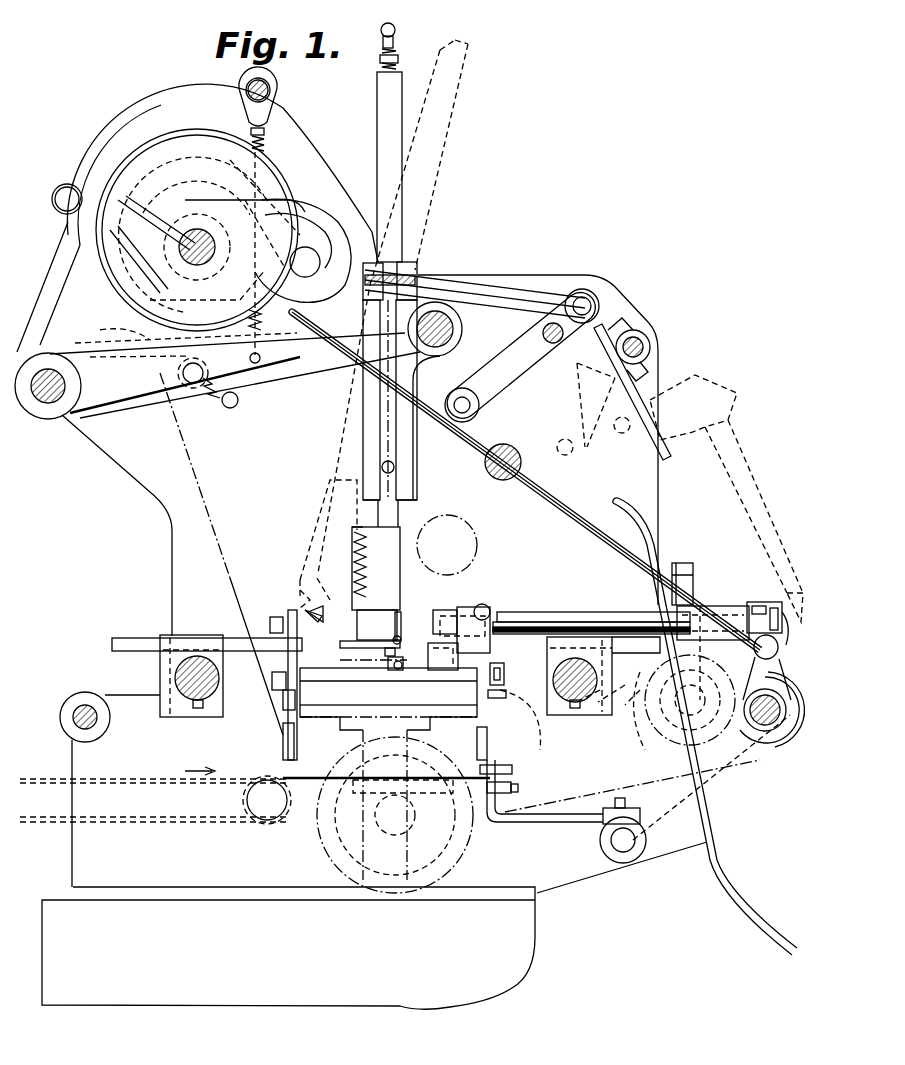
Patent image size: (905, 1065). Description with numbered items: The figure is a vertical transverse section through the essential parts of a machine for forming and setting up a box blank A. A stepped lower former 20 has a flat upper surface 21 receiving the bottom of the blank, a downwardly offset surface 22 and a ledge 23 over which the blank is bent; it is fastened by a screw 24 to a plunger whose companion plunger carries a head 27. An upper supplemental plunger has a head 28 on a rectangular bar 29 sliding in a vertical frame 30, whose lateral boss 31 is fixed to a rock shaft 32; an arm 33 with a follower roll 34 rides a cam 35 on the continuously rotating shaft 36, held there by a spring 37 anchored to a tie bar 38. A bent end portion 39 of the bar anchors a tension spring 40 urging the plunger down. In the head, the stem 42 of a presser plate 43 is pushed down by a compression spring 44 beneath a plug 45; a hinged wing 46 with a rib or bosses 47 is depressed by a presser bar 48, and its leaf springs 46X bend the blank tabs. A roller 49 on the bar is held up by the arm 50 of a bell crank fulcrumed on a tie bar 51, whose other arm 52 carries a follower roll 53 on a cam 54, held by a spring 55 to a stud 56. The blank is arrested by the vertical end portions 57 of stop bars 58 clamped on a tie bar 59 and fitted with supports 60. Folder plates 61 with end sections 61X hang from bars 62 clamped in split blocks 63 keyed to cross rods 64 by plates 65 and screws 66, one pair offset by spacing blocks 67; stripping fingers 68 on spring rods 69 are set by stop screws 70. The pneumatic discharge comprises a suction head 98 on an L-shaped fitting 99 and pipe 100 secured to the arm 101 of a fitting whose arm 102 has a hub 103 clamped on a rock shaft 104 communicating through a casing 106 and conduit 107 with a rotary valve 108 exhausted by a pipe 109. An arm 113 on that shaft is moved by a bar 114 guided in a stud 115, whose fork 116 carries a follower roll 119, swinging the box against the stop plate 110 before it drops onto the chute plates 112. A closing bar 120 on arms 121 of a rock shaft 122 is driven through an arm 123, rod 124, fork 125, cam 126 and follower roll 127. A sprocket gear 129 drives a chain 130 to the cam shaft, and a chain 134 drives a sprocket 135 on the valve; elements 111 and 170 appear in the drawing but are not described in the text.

The lower former 20 is at (388, 792).
The flat upper surface 21 is at (157, 806).
The downwardly offset flat surface 22 is at (400, 722).
The ledge 23 is at (352, 708).
The screw 24 is at (190, 146).
The head 27 is at (388, 686).
The plunger head 28 is at (378, 110).
The bar 29 is at (397, 507).
The frame 30 is at (418, 447).
The lateral boss 31 is at (463, 336).
The rock shaft 32 is at (455, 322).
The arm 33 is at (266, 376).
The follower roll 34 is at (186, 385).
The cam 35 is at (150, 365).
The continuously rotating shaft 36 is at (180, 250).
The spring 37 is at (266, 139).
The tie bar 38 is at (275, 92).
The laterally bent end portion 39 is at (396, 33).
The tension spring 40 is at (399, 60).
The stem 42 is at (328, 615).
The presser plate 43 is at (342, 645).
The compression spring 44 is at (350, 565).
The screw or plug 45 is at (360, 520).
The wing 46 is at (385, 690).
The leaf springs 46X is at (292, 600).
The rib or spaced bosses 47 is at (398, 636).
The presser bar 48 is at (400, 615).
The antifriction roller 49 is at (414, 272).
The arm 50 is at (290, 381).
The tie bar 51 is at (48, 398).
The arm 52 is at (42, 288).
The cam follower roll 53 is at (60, 198).
The cam 54 is at (110, 170).
The tension spring 55 is at (203, 402).
The stud 56 is at (229, 409).
The vertical end portions 57 is at (512, 769).
The horizontal bars 58 is at (566, 823).
The tie bar 59 is at (632, 840).
The adjustable supports 60 is at (518, 788).
The folder plates 61 is at (300, 722).
The vertical end sections 61X is at (283, 752).
The horizontal bars 62 is at (530, 647).
The split blocks 63 is at (198, 708).
The cross rods 64 is at (185, 695).
The plates 65 is at (565, 636).
The screws 66 is at (138, 665).
The spacing blocks 67 is at (496, 690).
The fingers 68 is at (284, 705).
The vertical rods 69 is at (275, 662).
The stop screws 70 is at (275, 680).
The suction head 98 is at (444, 674).
The tubular L-shaped fitting 99 is at (450, 612).
The pipe 100 is at (513, 620).
The arm 101 is at (712, 605).
The arm 102 is at (792, 608).
The hub 103 is at (772, 730).
The rock shaft 104 is at (766, 740).
The casing 106 is at (760, 730).
The conduit 107 is at (758, 725).
The rotary valve 108 is at (655, 740).
The pipe 109 is at (692, 568).
The stop plate 110 is at (650, 430).
The bracket 111 is at (642, 345).
The inclined plates 112 is at (643, 522).
The arm 113 is at (770, 663).
The bar 114 is at (560, 505).
The stud 115 is at (510, 452).
The fork 116 is at (160, 166).
The follower roll 119 is at (155, 192).
The bar 120 is at (480, 412).
The arms 121 is at (498, 386).
The rock shaft 122 is at (562, 340).
The arm 123 is at (607, 327).
The rod 124 is at (487, 297).
The fork 125 is at (305, 215).
The cam 126 is at (305, 233).
The follower roll 127 is at (312, 258).
The sprocket gear 129 is at (333, 867).
The sprocket chain 130 is at (205, 510).
The sprocket chain 134 is at (628, 790).
The sprocket 135 is at (624, 711).
The cam 170 is at (248, 178).
The blank A is at (318, 776).